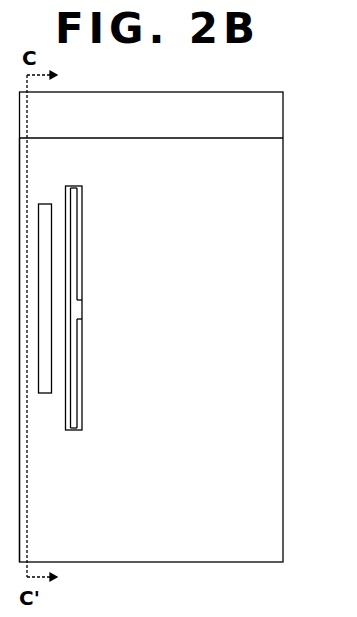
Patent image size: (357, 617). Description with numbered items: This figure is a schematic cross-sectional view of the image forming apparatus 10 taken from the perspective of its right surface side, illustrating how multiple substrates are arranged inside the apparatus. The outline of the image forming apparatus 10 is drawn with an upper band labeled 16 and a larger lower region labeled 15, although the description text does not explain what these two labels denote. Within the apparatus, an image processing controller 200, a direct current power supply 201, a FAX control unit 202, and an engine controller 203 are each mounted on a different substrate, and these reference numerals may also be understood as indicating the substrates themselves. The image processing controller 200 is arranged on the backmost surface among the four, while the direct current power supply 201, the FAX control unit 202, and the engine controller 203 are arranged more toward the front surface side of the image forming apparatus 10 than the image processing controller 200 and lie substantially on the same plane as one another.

The image forming apparatus 10 is at (250, 90).
The display region 15 is at (284, 159).
The peripheral region 16 is at (277, 117).
The image processing controller 200 is at (44, 204).
The direct current power supply 201 is at (78, 310).
The FAX control unit 202 is at (84, 208).
The engine controller 203 is at (83, 372).